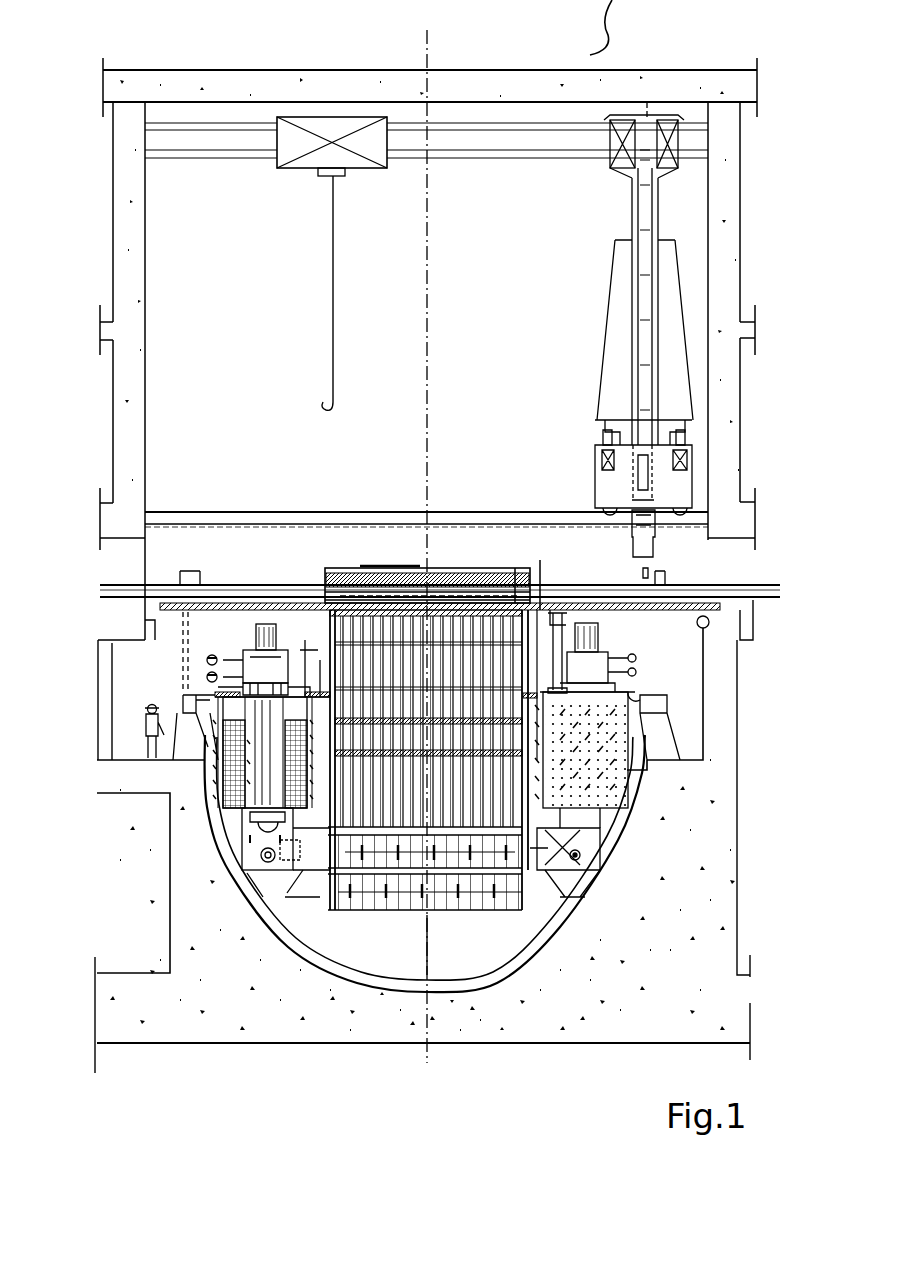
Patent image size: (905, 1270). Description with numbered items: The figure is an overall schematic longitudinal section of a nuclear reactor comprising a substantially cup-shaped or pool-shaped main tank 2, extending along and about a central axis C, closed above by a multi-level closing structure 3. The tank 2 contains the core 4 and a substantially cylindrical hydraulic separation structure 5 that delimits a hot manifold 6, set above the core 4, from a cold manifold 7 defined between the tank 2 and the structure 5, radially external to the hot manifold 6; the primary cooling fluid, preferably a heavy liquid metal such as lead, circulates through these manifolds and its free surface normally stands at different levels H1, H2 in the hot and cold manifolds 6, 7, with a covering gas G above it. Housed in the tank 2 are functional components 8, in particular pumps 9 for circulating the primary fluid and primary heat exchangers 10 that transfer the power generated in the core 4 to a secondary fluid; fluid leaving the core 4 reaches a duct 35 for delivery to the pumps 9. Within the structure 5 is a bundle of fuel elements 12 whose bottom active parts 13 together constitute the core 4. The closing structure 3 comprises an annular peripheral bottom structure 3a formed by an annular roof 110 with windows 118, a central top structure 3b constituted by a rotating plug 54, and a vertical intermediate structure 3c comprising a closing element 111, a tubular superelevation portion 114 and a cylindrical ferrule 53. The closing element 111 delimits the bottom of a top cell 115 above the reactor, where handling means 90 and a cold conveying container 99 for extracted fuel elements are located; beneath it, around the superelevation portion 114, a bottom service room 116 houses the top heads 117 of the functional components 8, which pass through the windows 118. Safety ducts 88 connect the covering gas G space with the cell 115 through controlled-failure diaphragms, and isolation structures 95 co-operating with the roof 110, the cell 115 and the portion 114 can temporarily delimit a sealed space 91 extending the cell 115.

The main tank 2 is at (303, 947).
The multi-level closing structure 3 is at (630, 693).
The peripheral bottom structure 3a is at (541, 627).
The central top structure 3b is at (453, 566).
The vertical intermediate structure 3c is at (538, 672).
The core 4 is at (440, 898).
The hydraulic separation structure 5 is at (640, 738).
The hot manifold 6 is at (390, 883).
The cold manifold 7 is at (530, 783).
The functional components 8 is at (457, 803).
The pumps 9 is at (263, 787).
The primary heat exchangers 10 is at (230, 773).
The fuel elements 12 is at (548, 810).
The bottom active parts 13 is at (457, 888).
The delivery duct 35 is at (283, 873).
The cylindrical ferrule 53 is at (518, 600).
The rotating plug 54 is at (466, 568).
The safety ducts 88 is at (560, 633).
The handling means 90 is at (353, 160).
The isolated space 91 is at (217, 642).
The isolation structures 95 is at (183, 657).
The cold conveying container 99 is at (658, 307).
The annular roof 110 is at (320, 650).
The closing element 111 is at (160, 607).
The tubular superelevation portion 114 is at (318, 690).
The top cell 115 is at (243, 310).
The bottom service room 116 is at (690, 643).
The top heads 117 is at (255, 642).
The windows 118 is at (647, 713).
The central axis C is at (429, 42).
The level E is at (404, 966).
The covering gas G is at (208, 678).
The primary fluid level in hot manifold H1 is at (342, 745).
The primary fluid level in cold manifold H2 is at (331, 705).